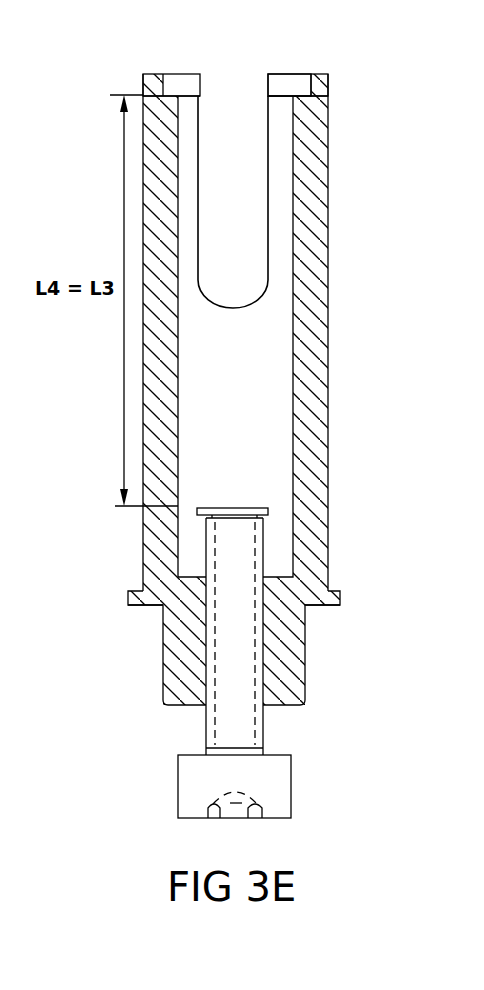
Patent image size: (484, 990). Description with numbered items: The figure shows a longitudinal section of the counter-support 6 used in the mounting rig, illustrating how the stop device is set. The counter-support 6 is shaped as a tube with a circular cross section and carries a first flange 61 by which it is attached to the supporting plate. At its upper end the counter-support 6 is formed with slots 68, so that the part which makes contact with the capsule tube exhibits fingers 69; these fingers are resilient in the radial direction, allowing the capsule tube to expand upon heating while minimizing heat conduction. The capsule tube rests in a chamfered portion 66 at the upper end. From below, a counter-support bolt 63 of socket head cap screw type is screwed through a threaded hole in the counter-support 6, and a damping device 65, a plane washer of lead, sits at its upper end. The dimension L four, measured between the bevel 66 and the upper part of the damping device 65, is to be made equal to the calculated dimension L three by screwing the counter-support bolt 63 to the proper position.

The counter-support 6 is at (328, 345).
The fingers 69 is at (143, 80).
The chamfered portion 66 is at (305, 97).
The slots 68 is at (268, 116).
The damping device 65 is at (244, 507).
The first flange 61 is at (333, 591).
The counter-support bolt 63 is at (292, 782).